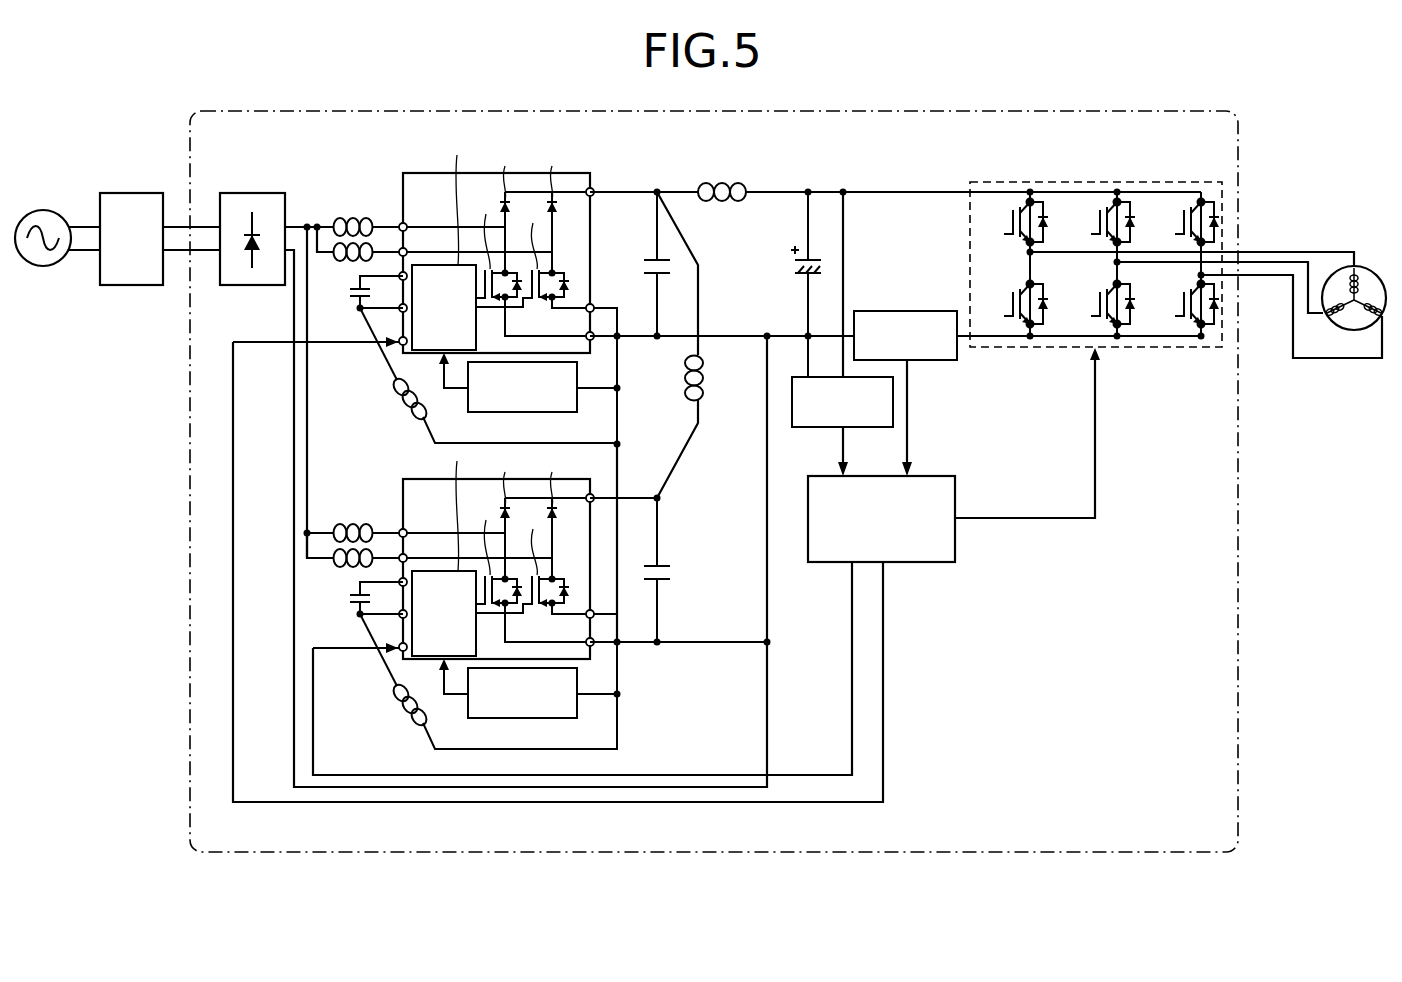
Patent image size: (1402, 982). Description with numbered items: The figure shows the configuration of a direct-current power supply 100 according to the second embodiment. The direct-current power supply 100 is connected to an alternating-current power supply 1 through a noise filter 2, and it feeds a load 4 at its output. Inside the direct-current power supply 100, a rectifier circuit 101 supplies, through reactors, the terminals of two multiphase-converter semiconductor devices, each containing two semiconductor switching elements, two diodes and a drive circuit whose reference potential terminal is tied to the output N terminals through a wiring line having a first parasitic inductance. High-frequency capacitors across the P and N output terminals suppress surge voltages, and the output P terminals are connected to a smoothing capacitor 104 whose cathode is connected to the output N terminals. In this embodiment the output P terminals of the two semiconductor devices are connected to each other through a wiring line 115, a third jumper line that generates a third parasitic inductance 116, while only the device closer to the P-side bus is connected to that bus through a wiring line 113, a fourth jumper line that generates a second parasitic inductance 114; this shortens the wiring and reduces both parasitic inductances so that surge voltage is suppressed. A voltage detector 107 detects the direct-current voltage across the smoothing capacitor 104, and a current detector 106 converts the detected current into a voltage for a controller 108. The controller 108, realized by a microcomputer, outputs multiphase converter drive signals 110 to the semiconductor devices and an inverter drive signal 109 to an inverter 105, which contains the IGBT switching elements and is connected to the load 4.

The alternating-current power supply 1 is at (46, 210).
The noise filter 2 is at (132, 193).
The load 4 is at (1363, 268).
The direct-current power supply 100 is at (205, 853).
The rectifier circuit 101 is at (252, 193).
The smoothing capacitor 104 is at (800, 278).
The inverter 105 is at (1000, 182).
The current detector 106 is at (898, 311).
The voltage detector 107 is at (819, 428).
The controller 108 is at (829, 563).
The inverter drive signal 109 is at (978, 518).
The multiphase converter drive signal 110 is at (640, 775).
The wiring line 113 is at (780, 192).
The second parasitic inductance 114 is at (722, 201).
The wiring line 115 is at (689, 448).
The third parasitic inductance 116 is at (690, 397).